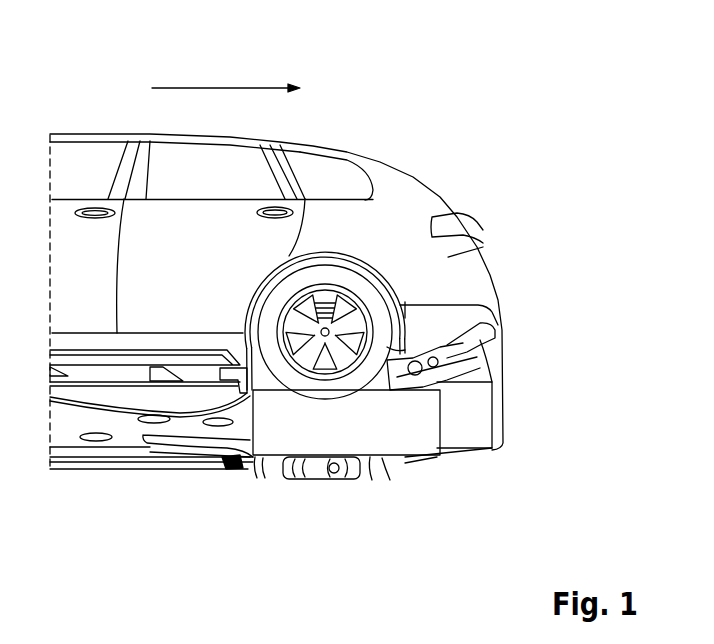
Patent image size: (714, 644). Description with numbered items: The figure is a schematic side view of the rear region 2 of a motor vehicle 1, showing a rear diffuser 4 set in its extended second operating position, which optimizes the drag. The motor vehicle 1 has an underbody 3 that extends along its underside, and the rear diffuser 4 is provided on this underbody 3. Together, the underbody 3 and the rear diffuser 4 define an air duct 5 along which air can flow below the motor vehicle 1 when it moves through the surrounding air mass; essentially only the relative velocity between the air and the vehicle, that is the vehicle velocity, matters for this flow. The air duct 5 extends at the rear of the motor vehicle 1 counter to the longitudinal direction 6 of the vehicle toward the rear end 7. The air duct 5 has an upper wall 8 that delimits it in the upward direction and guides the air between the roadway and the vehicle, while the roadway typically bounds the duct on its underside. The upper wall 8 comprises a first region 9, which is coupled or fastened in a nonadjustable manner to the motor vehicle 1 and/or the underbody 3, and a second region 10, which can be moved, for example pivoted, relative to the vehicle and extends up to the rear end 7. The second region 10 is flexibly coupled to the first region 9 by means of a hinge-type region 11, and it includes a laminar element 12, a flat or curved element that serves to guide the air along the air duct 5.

The motor vehicle 1 is at (474, 110).
The rear region 2 is at (483, 247).
The underbody 3 is at (132, 428).
The rear diffuser 4 is at (468, 426).
The air duct 5 is at (405, 480).
The longitudinal direction of the vehicle 6 is at (218, 88).
The rear end 7 is at (493, 372).
The upper wall 8 is at (292, 430).
The first region 9 is at (195, 425).
The second region 10 is at (425, 430).
The hinge-type region 11 is at (252, 457).
The laminar element 12 is at (470, 398).